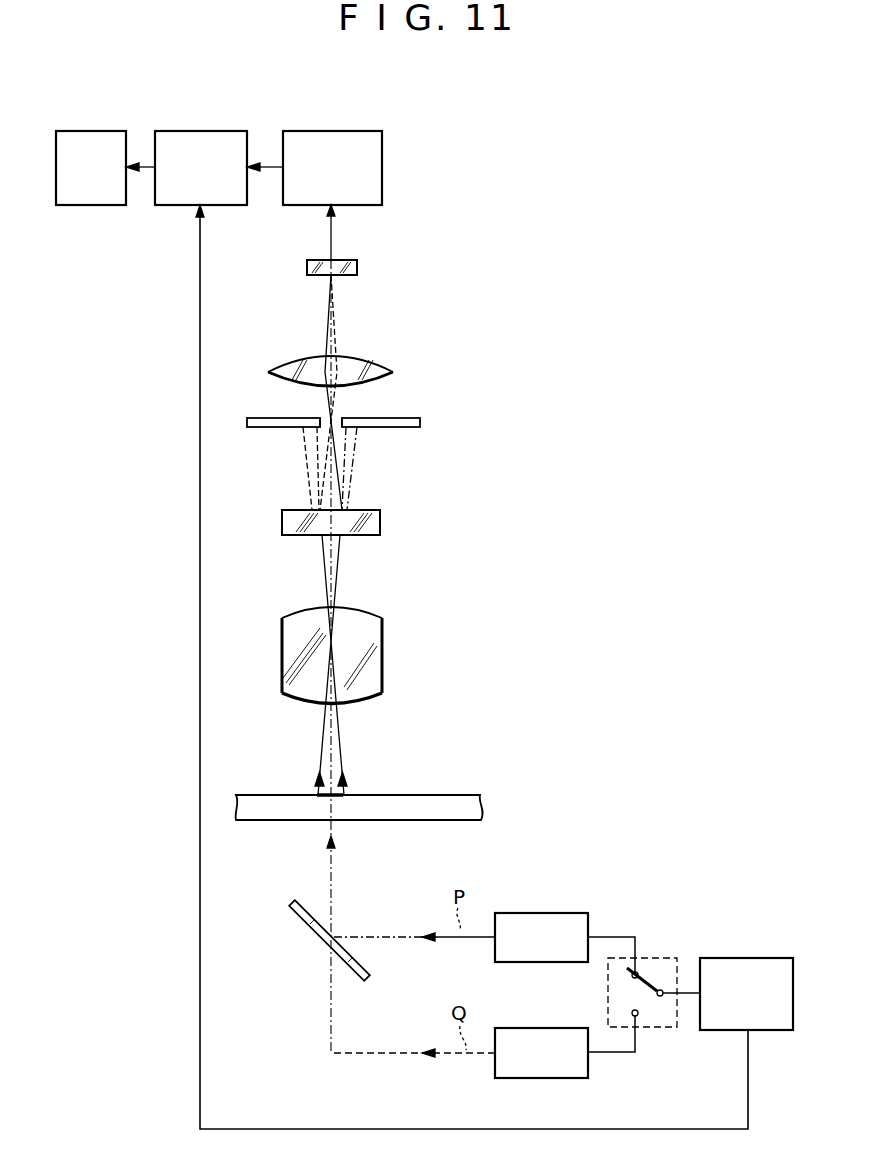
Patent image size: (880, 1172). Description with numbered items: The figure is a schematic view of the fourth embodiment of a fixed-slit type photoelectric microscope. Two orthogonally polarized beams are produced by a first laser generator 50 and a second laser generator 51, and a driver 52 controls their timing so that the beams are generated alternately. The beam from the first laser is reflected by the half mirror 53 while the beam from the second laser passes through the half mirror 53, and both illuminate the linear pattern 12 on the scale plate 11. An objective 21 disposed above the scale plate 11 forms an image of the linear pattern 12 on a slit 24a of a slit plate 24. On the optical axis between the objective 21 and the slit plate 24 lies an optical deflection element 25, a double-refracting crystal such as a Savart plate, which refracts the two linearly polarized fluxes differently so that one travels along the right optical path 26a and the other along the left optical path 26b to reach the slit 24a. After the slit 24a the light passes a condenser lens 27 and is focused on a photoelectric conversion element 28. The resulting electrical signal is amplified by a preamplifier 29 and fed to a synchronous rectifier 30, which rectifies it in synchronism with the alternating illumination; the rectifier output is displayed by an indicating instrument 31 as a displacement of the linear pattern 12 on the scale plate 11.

The scale plate 11 is at (432, 795).
The linear pattern 12 is at (343, 796).
The objective 21 is at (382, 655).
The slit plate 24 is at (420, 422).
The slit 24a is at (336, 418).
The optical deflection element 25 is at (380, 522).
The right optical path 26a is at (352, 466).
The left optical path 26b is at (305, 464).
The condenser lens 27 is at (362, 358).
The photoelectric conversion element 28 is at (357, 267).
The preamplifier 29 is at (335, 131).
The synchronous rectifier 30 is at (202, 131).
The indicating instrument 31 is at (92, 131).
The first laser generator 50 is at (546, 913).
The second laser generator 51 is at (546, 1028).
The driver 52 is at (751, 958).
The half mirror 53 is at (300, 930).